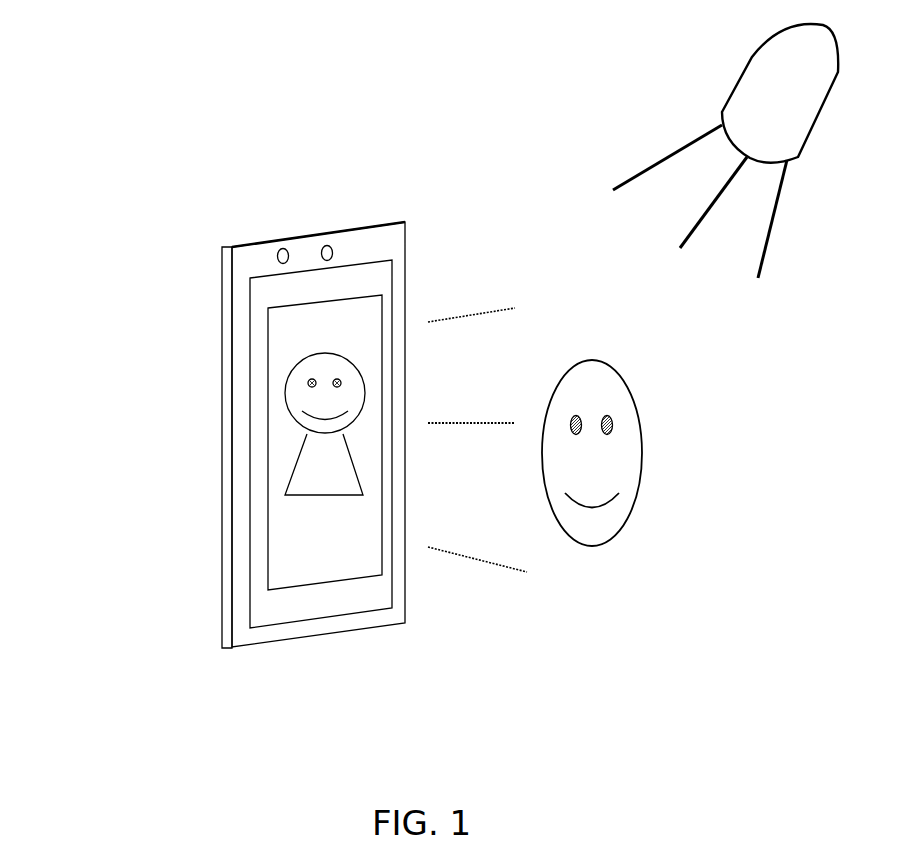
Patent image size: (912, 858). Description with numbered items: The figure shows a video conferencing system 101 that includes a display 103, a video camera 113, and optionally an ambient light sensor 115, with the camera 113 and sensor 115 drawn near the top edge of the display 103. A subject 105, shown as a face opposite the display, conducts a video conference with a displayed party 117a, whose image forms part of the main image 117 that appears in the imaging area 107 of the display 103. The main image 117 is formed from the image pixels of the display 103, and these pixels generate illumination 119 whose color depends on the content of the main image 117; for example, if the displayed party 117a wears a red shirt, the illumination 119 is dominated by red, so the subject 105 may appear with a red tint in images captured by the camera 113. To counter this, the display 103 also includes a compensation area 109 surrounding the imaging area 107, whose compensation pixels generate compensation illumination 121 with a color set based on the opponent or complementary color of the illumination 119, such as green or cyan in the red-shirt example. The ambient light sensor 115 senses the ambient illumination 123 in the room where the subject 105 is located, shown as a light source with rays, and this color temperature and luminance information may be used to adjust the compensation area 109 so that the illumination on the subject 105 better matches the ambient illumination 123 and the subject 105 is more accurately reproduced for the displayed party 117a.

The video conferencing system 101 is at (165, 43).
The display 103 is at (222, 565).
The subject 105 is at (592, 472).
The imaging area 107 is at (353, 530).
The compensation area 109 is at (315, 597).
The video camera 113 is at (328, 244).
The ambient light sensor 115 is at (276, 256).
The main image 117 is at (284, 445).
The displayed party 117a is at (285, 393).
The illumination 119 is at (471, 407).
The compensation illumination 121 is at (477, 429).
The ambient illumination 123 is at (725, 151).